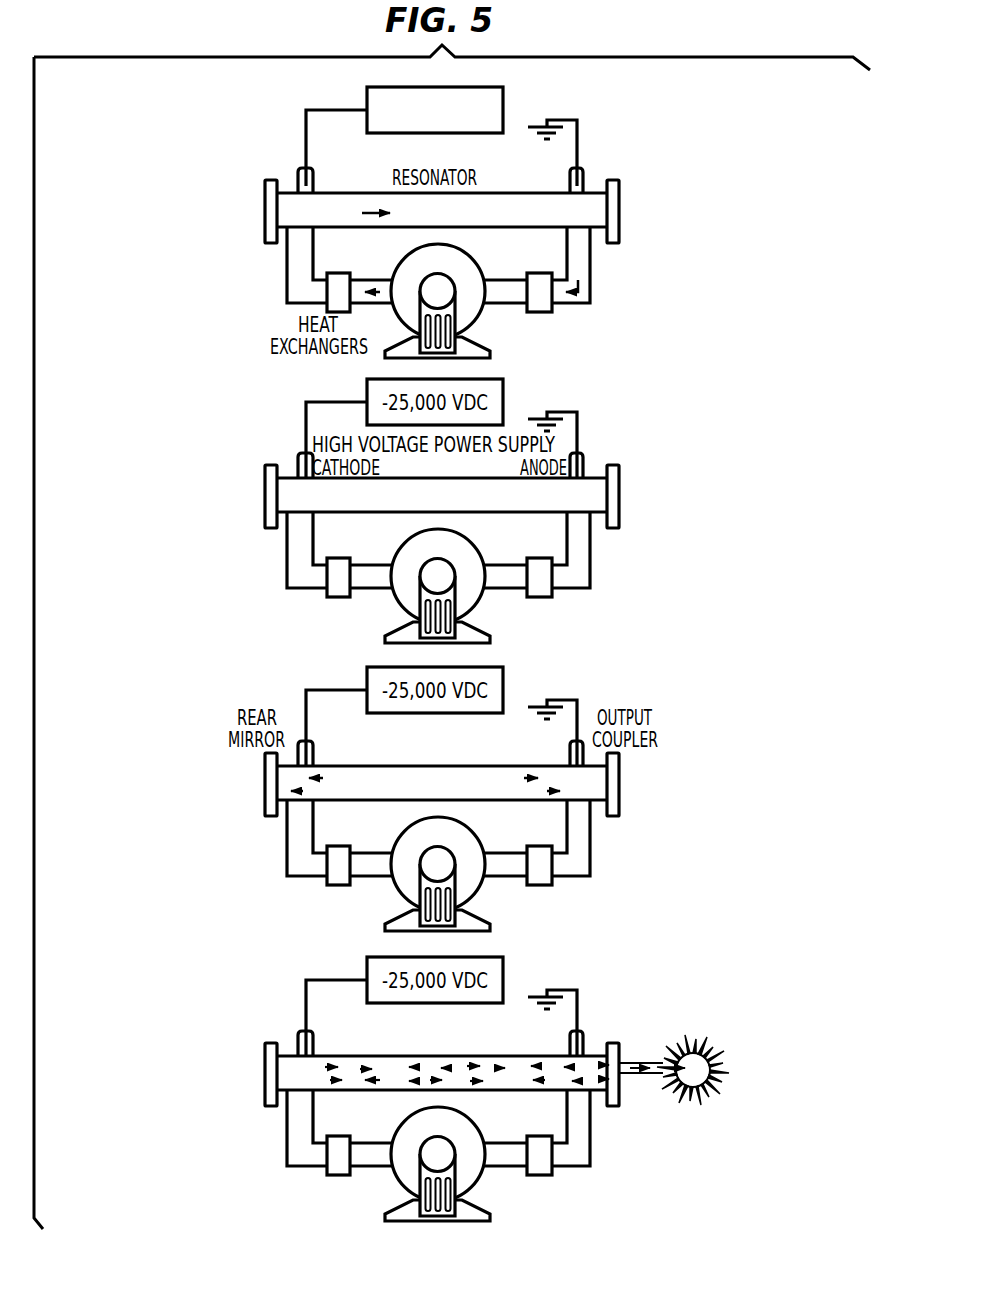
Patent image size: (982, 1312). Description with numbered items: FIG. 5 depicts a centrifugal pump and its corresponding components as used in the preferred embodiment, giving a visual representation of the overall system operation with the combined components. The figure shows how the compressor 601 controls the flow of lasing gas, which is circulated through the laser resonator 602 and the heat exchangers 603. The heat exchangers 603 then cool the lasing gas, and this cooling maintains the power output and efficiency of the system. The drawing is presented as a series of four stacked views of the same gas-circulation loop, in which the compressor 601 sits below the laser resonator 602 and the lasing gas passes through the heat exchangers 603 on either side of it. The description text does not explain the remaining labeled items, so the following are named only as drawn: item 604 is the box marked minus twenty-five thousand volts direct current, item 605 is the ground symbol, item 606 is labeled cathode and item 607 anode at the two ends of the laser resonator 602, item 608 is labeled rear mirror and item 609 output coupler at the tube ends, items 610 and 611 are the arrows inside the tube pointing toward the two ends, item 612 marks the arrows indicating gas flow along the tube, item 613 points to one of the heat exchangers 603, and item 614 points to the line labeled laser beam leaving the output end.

The compressor 601 is at (490, 356).
The laser resonator 602 is at (352, 192).
The heat exchangers 603 is at (340, 273).
The high voltage power supply 604 is at (504, 108).
The ground 605 is at (542, 140).
The cathode 606 is at (276, 455).
The anode 607 is at (606, 455).
The rear mirror 608 is at (241, 784).
The output coupler 609 is at (642, 784).
The light propagating toward rear mirror 610 is at (330, 803).
The light propagating toward output coupler 611 is at (524, 803).
The gas flow in resonator 612 is at (442, 1062).
The heat exchanger 613 is at (316, 1174).
The laser beam 614 is at (637, 1078).